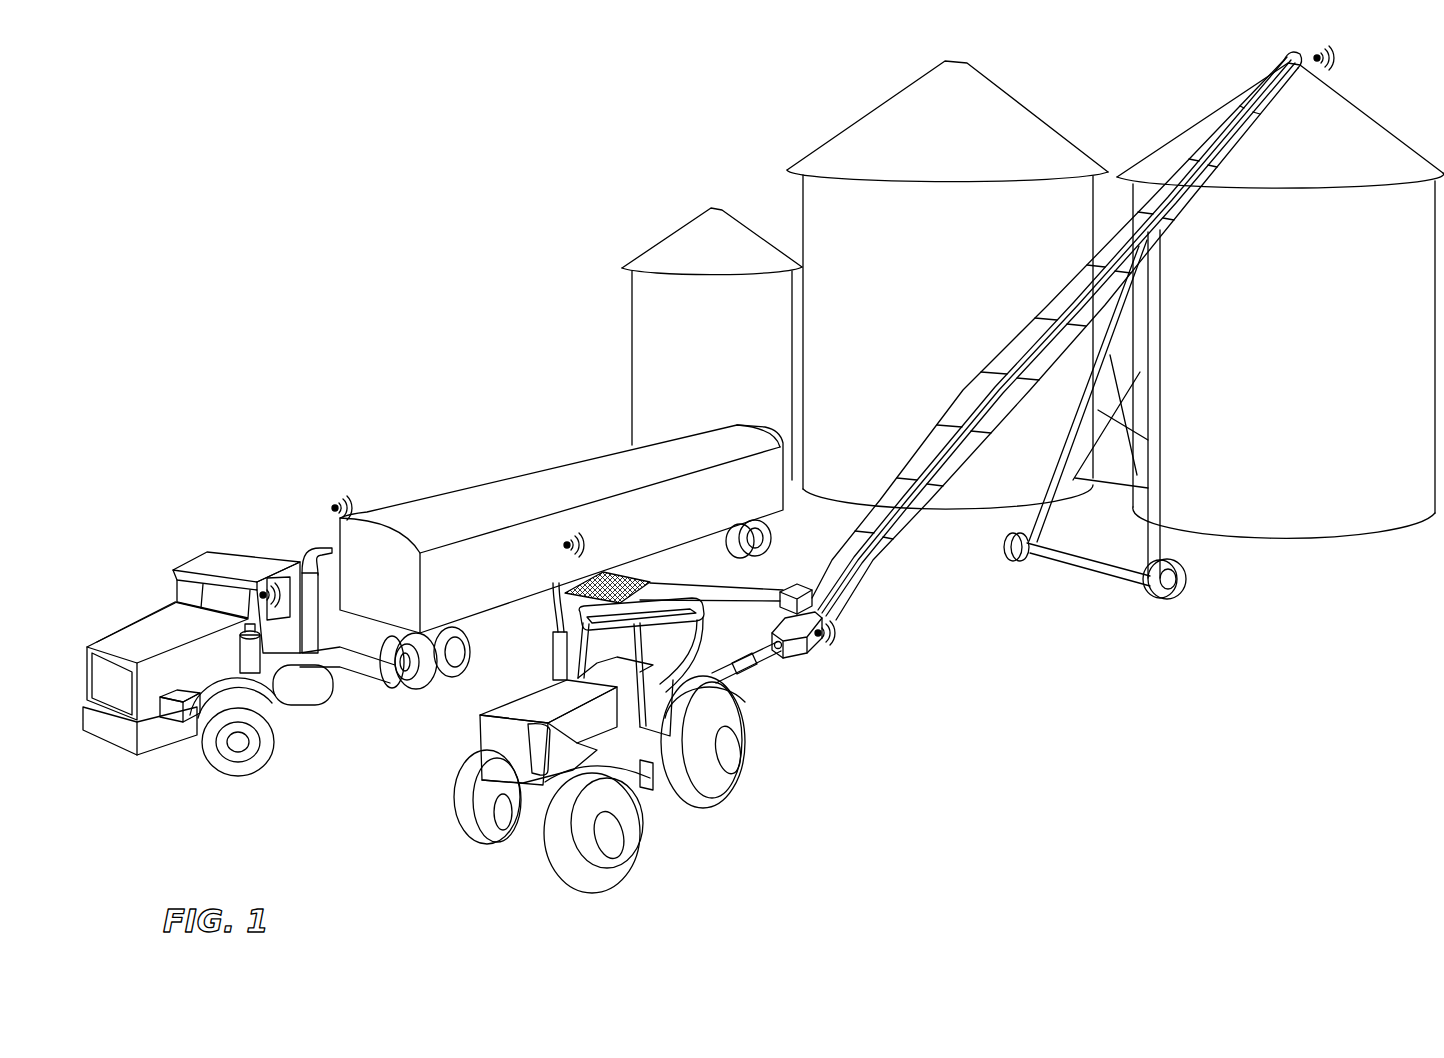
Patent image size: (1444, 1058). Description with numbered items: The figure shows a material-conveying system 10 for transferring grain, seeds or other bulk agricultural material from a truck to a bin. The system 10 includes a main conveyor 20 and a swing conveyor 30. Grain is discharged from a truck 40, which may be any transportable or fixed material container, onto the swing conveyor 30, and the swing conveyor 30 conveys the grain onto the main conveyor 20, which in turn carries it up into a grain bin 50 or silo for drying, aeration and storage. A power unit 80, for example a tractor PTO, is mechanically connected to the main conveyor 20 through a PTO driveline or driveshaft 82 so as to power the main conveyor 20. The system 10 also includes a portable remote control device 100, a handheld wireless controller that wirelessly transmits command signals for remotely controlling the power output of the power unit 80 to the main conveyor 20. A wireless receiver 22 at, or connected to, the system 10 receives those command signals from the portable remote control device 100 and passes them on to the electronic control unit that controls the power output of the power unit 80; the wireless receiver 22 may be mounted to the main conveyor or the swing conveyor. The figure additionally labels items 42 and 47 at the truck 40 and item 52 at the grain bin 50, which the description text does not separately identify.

The material-conveying system 10 is at (318, 354).
The main conveyor 20 is at (872, 560).
The wireless receiver 22 is at (834, 649).
The swing conveyor 30 is at (807, 600).
The truck 40 is at (458, 515).
The trailer wireless transceiver 42 is at (565, 541).
The trailer front wireless transceiver 47 is at (334, 505).
The grain bin 50 is at (1327, 517).
The bin wireless transceiver 52 is at (1333, 48).
The power unit 80 is at (537, 748).
The PTO driveline or driveshaft 82 is at (757, 663).
The portable remote control device 100 is at (262, 593).